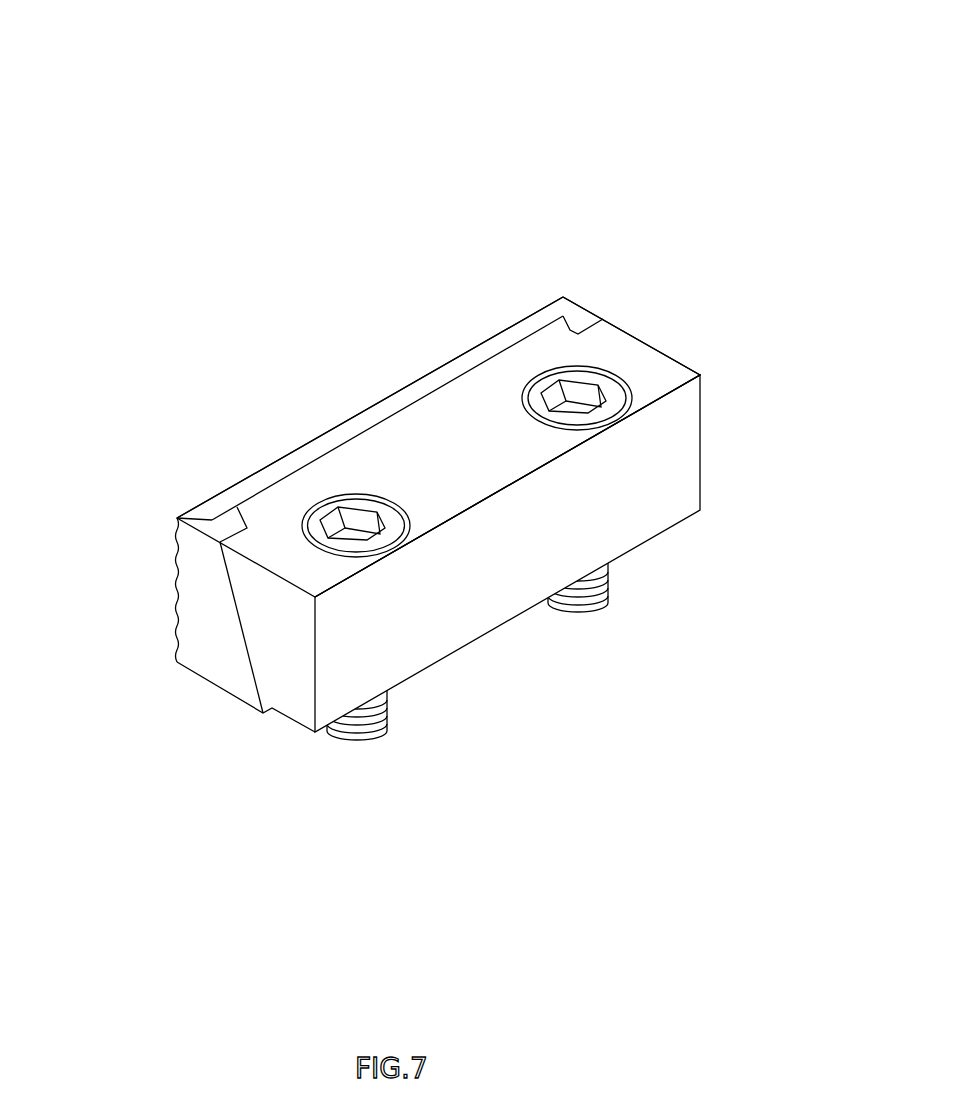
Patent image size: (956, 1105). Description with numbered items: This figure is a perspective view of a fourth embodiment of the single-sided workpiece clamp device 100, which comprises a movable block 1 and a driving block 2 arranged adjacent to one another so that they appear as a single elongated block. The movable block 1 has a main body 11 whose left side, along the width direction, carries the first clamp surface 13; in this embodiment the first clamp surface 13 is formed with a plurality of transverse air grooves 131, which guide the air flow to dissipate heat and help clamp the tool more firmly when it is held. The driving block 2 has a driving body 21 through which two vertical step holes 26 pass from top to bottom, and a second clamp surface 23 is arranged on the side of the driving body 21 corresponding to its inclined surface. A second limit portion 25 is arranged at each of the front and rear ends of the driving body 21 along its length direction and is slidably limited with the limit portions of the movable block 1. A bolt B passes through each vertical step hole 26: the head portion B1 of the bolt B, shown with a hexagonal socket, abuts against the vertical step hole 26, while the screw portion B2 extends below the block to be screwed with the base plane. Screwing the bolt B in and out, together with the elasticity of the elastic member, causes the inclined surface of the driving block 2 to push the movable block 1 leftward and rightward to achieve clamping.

The workpiece clamp device 100 is at (580, 144).
The movable block 1 is at (407, 385).
The main body 11 is at (472, 366).
The first clamp surface 13 is at (343, 423).
The transverse air grooves 131 is at (179, 610).
The second limit portion 25 is at (207, 524).
The driving block 2 is at (722, 521).
The driving body 21 is at (648, 368).
The second clamp surface 23 is at (558, 456).
The vertical step hole 26 is at (624, 399).
The bolt B is at (345, 505).
The head portion B1 is at (310, 530).
The screw portion B2 is at (372, 721).